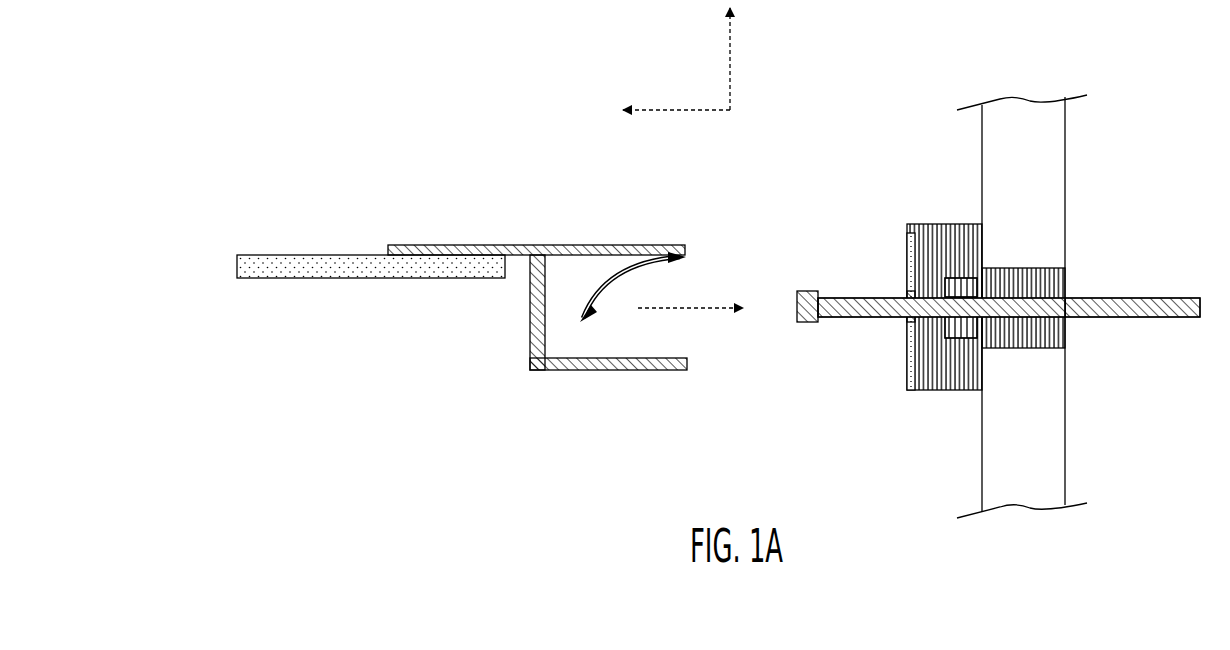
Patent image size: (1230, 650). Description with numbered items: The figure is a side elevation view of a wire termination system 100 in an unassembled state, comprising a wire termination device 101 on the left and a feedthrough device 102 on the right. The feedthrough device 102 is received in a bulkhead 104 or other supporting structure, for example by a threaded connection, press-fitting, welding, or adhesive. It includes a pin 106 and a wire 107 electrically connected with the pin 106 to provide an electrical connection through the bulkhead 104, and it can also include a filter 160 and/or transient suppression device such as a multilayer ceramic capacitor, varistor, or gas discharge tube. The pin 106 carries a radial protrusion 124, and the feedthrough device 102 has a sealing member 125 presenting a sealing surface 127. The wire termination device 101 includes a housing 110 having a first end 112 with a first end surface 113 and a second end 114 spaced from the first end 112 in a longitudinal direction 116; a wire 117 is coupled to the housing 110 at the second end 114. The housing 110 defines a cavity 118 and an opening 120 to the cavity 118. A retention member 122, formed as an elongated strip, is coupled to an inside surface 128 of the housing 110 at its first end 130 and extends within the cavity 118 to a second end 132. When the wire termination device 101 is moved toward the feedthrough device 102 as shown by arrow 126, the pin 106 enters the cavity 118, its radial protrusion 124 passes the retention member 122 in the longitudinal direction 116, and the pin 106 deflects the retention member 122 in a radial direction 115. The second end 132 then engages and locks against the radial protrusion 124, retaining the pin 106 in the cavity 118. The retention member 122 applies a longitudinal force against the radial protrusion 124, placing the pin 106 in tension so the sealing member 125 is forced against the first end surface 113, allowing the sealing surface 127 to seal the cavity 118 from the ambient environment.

The wire termination system 100 is at (322, 145).
The wire termination device 101 is at (533, 243).
The feedthrough device 102 is at (914, 247).
The bulkhead 104 is at (1038, 190).
The pin 106 is at (840, 293).
The wire 107 is at (1133, 297).
The housing 110 is at (576, 300).
The first end 112 is at (690, 247).
The first end surface 113 is at (690, 368).
The second end 114 is at (385, 250).
The radial direction 115 is at (730, 70).
The longitudinal direction 116 is at (655, 110).
The wire 117 is at (345, 282).
The cavity 118 is at (582, 314).
The opening 120 is at (693, 338).
The retention member 122 is at (628, 274).
The radial protrusion 124 is at (803, 289).
The sealing member 125 is at (908, 378).
The arrow 126 is at (722, 307).
The sealing surface 127 is at (903, 342).
The inside surface 128 is at (600, 258).
The first end 130 is at (680, 262).
The second end 132 is at (568, 345).
The filter 160 is at (950, 278).